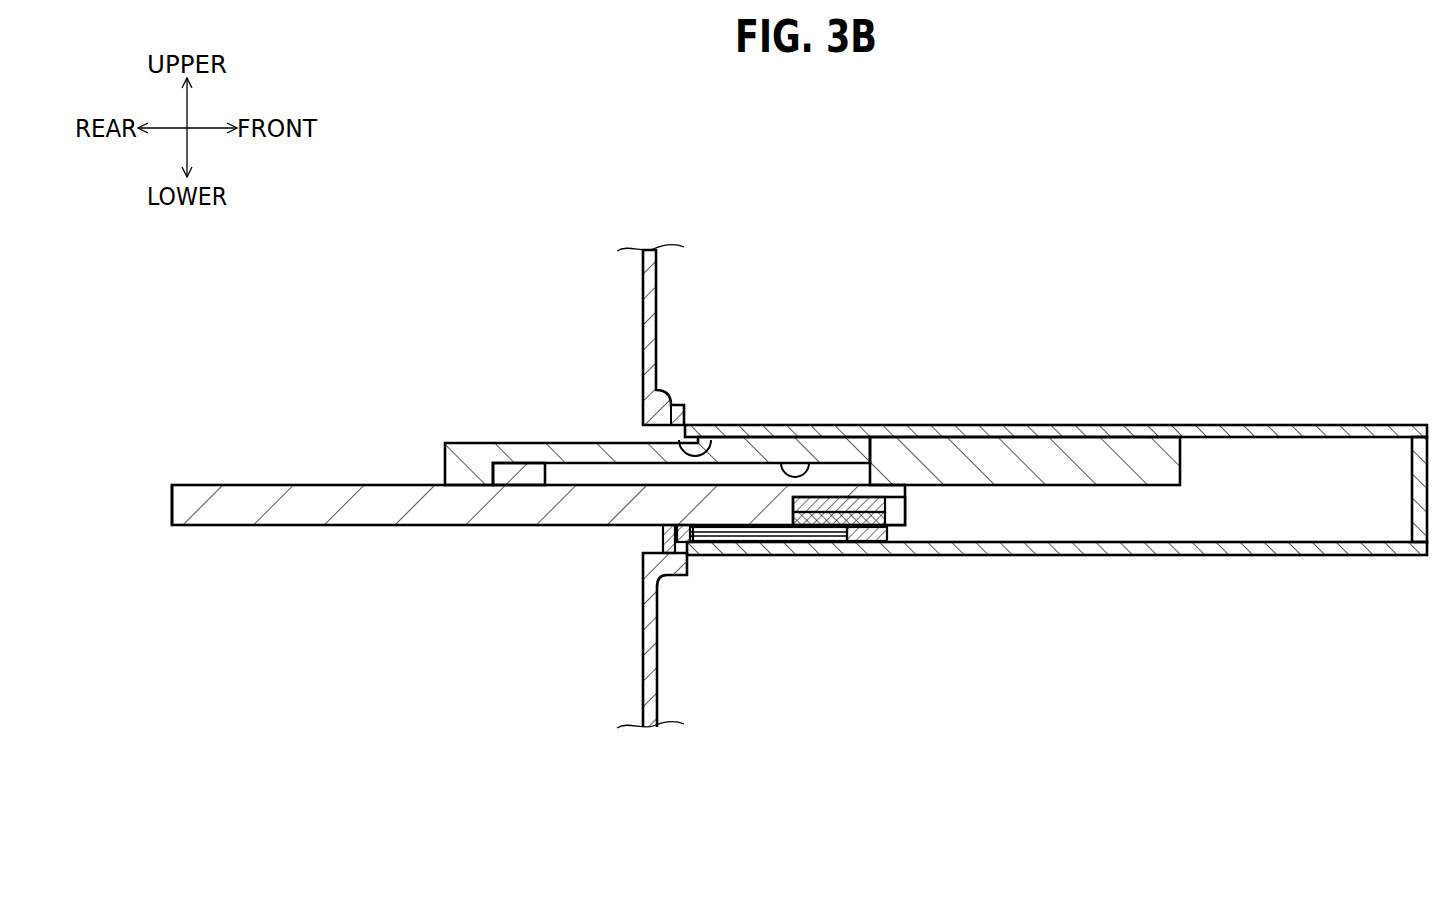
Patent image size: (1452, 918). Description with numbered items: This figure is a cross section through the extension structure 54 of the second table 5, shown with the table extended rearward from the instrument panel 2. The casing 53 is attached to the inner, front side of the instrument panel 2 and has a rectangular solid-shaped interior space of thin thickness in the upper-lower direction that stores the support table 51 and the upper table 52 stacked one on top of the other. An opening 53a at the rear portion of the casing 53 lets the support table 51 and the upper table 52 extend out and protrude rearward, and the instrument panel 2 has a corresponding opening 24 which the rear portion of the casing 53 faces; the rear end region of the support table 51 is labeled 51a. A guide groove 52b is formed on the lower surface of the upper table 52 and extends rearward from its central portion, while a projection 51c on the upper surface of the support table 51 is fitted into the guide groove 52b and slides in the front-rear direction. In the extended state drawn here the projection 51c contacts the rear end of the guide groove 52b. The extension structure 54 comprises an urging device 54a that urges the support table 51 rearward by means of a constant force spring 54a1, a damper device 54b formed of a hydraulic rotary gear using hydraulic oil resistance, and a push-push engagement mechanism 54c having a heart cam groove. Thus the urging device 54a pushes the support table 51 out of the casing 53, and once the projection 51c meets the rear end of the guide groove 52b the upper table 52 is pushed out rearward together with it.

The instrument panel 2 is at (643, 306).
The second table 5 is at (451, 362).
The support table 51 is at (328, 484).
The rear end of first guide member 51a is at (172, 505).
The projection 51c is at (512, 472).
The upper table 52 is at (483, 443).
The guide groove 52b is at (810, 463).
The casing 53 is at (1128, 425).
The opening 53a is at (712, 450).
The extension structure 54 is at (962, 320).
The urging device 54a is at (866, 541).
The constant force spring 54a1 is at (770, 541).
The damper device 54b is at (880, 518).
The push-push engagement mechanism 54c is at (872, 505).
The opening 24 is at (655, 538).